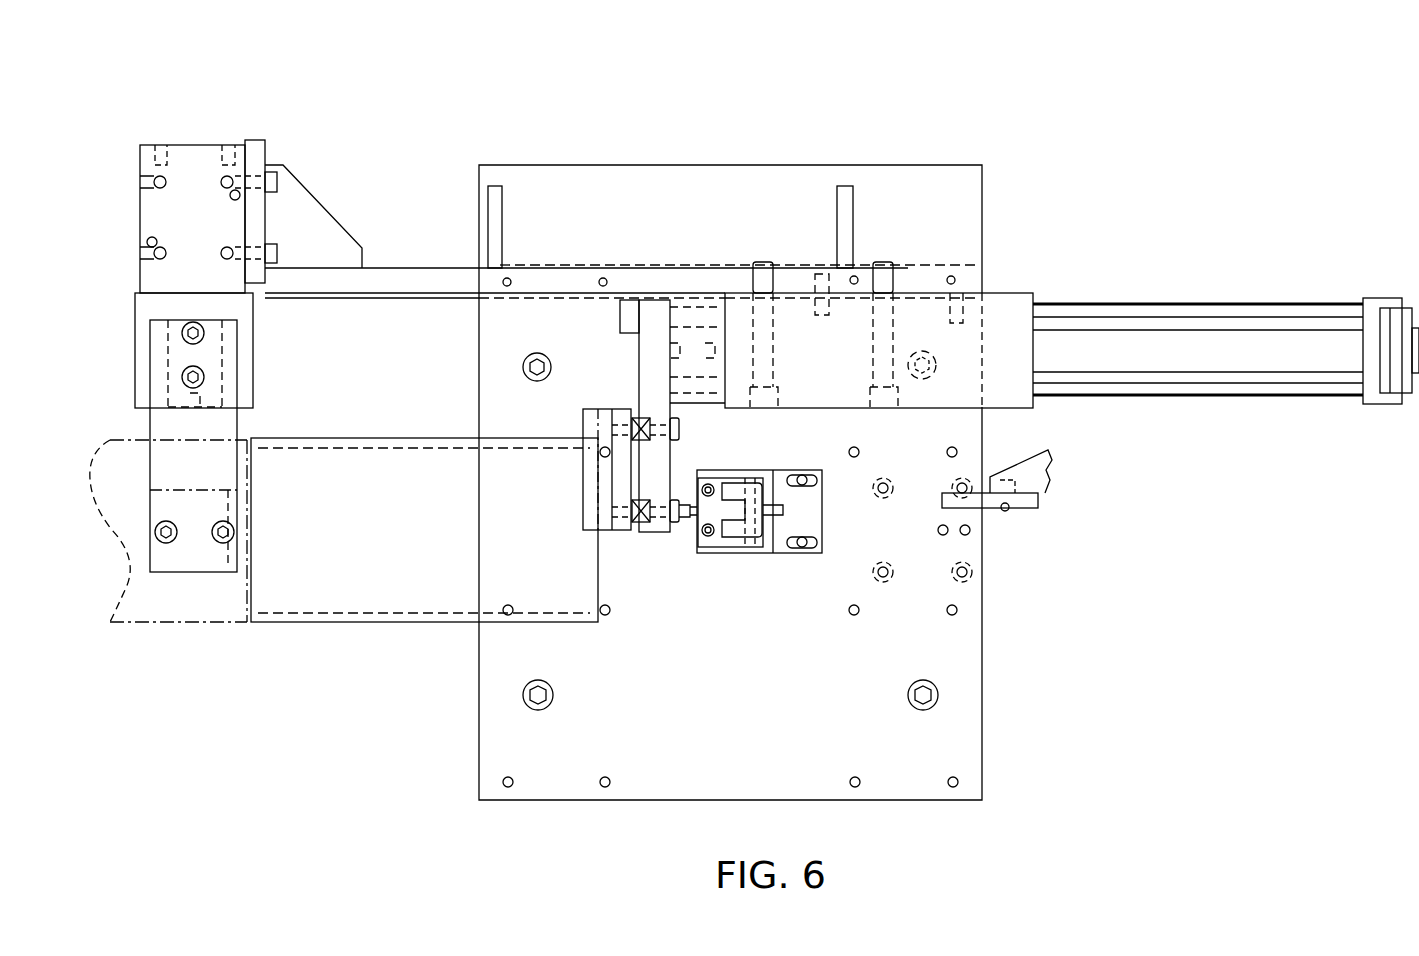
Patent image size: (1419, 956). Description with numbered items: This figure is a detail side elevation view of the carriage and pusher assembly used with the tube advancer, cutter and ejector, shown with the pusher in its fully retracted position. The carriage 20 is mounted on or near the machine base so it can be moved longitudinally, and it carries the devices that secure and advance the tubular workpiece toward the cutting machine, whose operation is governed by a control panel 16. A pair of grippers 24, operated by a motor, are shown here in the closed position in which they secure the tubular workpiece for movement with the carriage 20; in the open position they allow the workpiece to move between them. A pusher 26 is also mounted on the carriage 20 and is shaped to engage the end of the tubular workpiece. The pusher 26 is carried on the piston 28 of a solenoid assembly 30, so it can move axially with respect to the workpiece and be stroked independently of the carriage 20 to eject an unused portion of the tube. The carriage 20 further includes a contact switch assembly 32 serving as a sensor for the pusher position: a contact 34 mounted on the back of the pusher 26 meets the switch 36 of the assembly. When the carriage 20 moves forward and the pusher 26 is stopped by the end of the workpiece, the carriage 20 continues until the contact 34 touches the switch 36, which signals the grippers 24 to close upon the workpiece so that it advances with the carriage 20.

The control panel 16 is at (170, 615).
The carriage 20 is at (688, 100).
The grippers 24 is at (206, 557).
The pusher 26 is at (418, 605).
The piston 28 is at (1142, 340).
The solenoid assembly 30 is at (1036, 255).
The contact switch assembly 32 is at (787, 606).
The contact 34 is at (682, 522).
The switch 36 is at (732, 480).